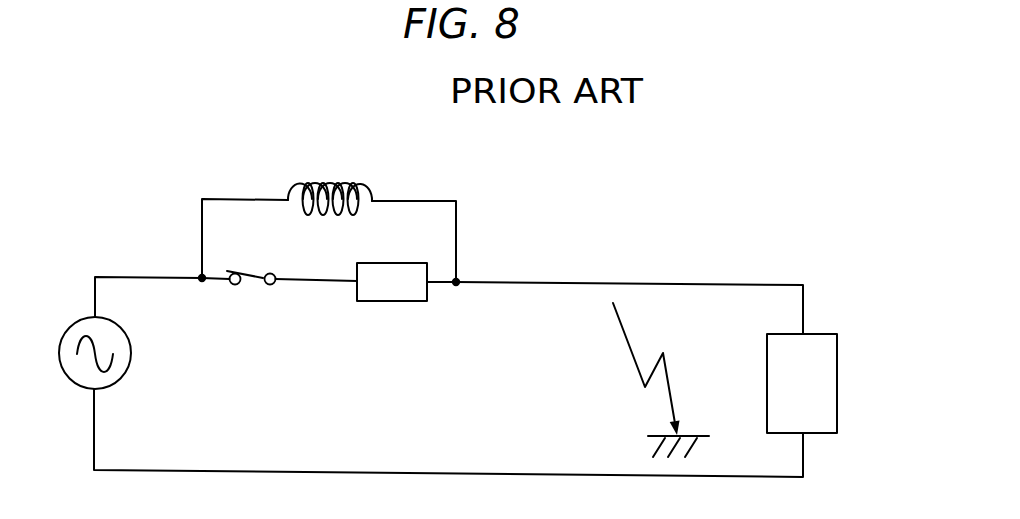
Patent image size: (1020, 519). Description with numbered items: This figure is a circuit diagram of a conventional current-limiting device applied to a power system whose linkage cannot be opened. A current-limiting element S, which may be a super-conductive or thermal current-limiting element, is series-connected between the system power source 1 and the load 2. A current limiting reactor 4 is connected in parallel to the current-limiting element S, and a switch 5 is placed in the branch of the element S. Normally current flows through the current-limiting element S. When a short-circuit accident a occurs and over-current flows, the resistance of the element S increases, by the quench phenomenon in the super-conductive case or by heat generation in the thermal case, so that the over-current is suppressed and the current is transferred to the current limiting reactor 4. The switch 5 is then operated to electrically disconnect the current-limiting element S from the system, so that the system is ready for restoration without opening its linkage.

The system power source 1 is at (66, 388).
The load 2 is at (852, 377).
The current limiting reactor 4 is at (366, 171).
The switch 5 is at (250, 298).
The current-limiting element S is at (369, 313).
The short-circuit accident a is at (661, 380).